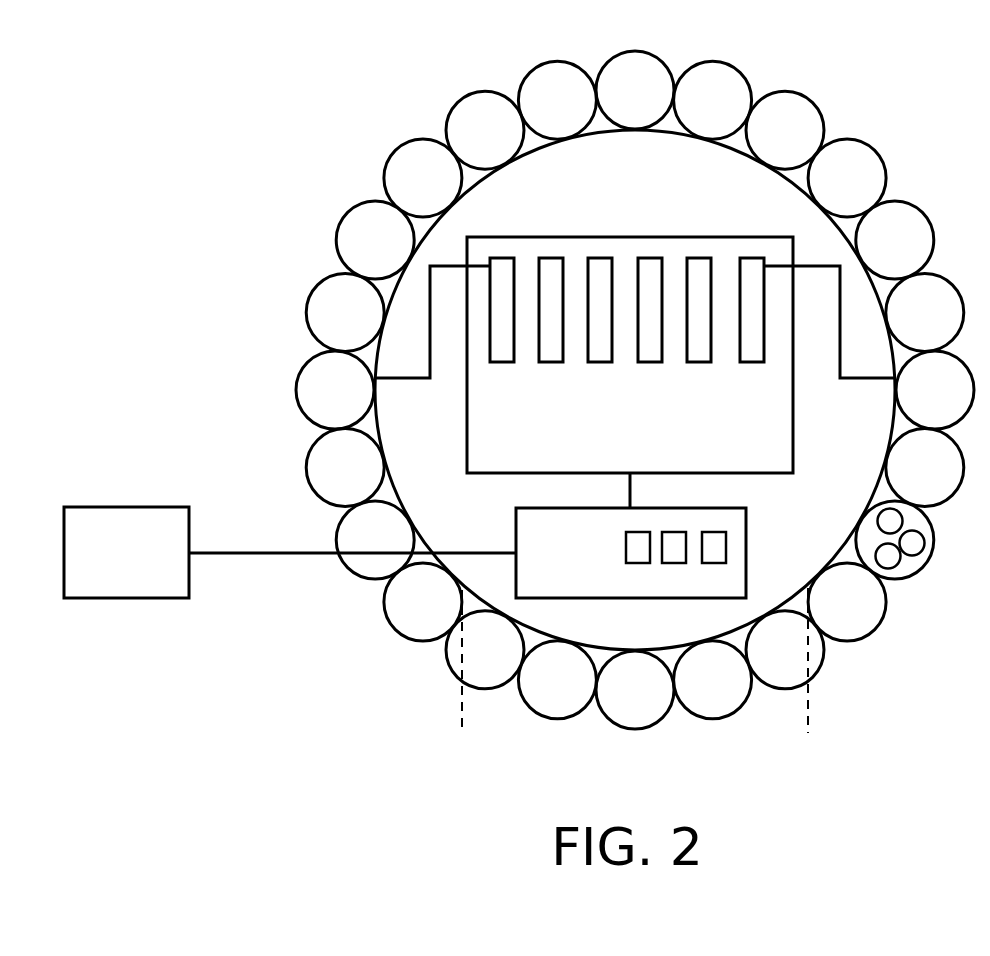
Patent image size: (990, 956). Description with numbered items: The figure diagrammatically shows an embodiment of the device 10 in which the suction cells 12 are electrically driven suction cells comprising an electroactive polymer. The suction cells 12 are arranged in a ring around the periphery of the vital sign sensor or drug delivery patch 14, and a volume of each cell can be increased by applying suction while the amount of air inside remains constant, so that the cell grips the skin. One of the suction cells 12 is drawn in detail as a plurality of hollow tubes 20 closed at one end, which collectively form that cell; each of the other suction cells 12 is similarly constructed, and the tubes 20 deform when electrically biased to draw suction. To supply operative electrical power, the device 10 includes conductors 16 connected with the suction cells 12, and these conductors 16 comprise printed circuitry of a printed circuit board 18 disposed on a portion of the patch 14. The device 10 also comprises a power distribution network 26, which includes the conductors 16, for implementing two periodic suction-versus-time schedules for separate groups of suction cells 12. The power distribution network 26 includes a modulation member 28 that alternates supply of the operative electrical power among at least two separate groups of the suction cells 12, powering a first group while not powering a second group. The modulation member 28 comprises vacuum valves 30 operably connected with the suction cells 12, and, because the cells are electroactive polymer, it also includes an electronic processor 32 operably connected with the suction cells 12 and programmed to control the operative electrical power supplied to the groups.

The device 10 is at (90, 118).
The suction cells 12 is at (498, 75).
The vital sign sensor or drug delivery patch 14 is at (619, 173).
The conductors 16 is at (480, 370).
The printed circuit board 18 is at (494, 451).
The hollow tubes 20 is at (903, 567).
The power distribution network 26 is at (462, 733).
The modulation member 28 is at (536, 564).
The vacuum valves 30 is at (617, 563).
The electronic processor 32 is at (108, 566).